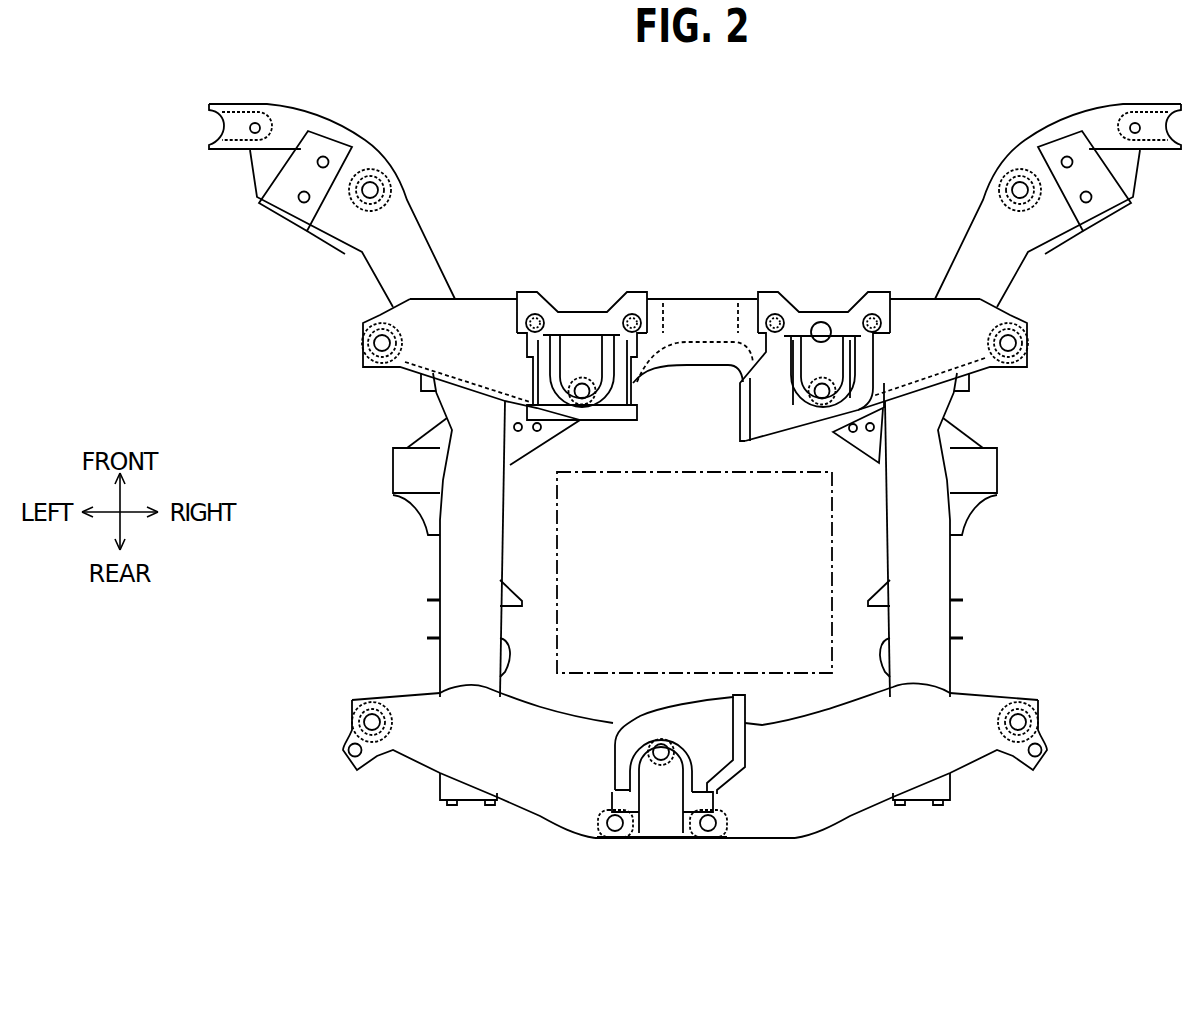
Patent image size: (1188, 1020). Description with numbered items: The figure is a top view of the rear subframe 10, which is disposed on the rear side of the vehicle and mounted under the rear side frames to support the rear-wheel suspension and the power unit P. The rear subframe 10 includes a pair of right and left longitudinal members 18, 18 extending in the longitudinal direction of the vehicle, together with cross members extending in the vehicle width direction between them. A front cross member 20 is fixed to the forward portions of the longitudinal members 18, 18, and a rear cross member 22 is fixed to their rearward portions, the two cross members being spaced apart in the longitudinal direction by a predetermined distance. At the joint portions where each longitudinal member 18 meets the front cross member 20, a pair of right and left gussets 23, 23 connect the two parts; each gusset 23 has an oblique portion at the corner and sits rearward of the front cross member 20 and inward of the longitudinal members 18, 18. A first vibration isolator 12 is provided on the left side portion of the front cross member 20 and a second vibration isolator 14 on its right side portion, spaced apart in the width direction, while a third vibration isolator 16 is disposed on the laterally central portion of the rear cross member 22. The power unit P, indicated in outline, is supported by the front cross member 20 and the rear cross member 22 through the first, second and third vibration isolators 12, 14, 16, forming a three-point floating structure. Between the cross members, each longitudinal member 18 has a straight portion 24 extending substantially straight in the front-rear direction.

The rear subframe 10 is at (780, 170).
The first vibration isolator 12 is at (582, 302).
The second vibration isolator 14 is at (821, 302).
The third vibration isolator 16 is at (662, 706).
The longitudinal member 18 is at (421, 578).
The front cross member 20 is at (697, 290).
The rear cross member 22 is at (742, 848).
The gusset 23 is at (540, 466).
The straight portion 24 is at (472, 560).
The power unit P is at (665, 470).